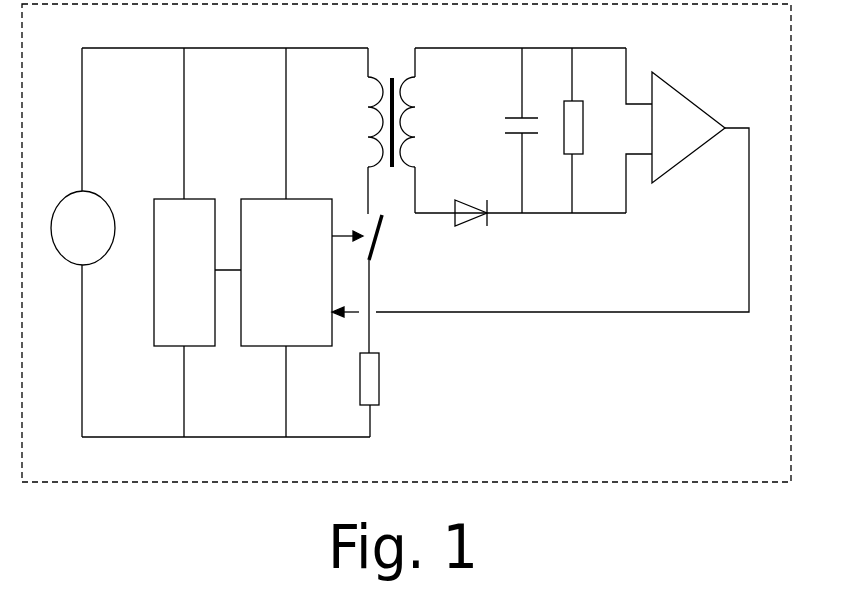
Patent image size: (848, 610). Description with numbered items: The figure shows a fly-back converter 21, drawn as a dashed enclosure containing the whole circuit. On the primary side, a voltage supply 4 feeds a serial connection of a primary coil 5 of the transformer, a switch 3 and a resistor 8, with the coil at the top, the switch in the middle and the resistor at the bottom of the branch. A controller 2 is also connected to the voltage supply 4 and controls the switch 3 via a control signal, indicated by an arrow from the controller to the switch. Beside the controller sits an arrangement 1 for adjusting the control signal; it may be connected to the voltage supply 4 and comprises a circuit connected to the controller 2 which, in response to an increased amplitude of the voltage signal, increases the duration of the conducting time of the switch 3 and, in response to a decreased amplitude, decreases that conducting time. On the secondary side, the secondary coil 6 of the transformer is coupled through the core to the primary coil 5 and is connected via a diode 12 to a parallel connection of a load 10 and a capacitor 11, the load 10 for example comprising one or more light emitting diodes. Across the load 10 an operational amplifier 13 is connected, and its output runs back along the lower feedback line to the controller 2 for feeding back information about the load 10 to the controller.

The arrangement 1 is at (182, 295).
The controller 2 is at (286, 295).
The switch 3 is at (386, 237).
The voltage supply 4 is at (83, 248).
The primary coil 5 is at (360, 122).
The secondary coil 6 is at (424, 122).
The resistor 8 is at (385, 379).
The load 10 is at (591, 147).
The capacitor 11 is at (509, 103).
The diode 12 is at (470, 235).
The operational amplifier 13 is at (689, 132).
The fly-back converter 21 is at (765, 482).